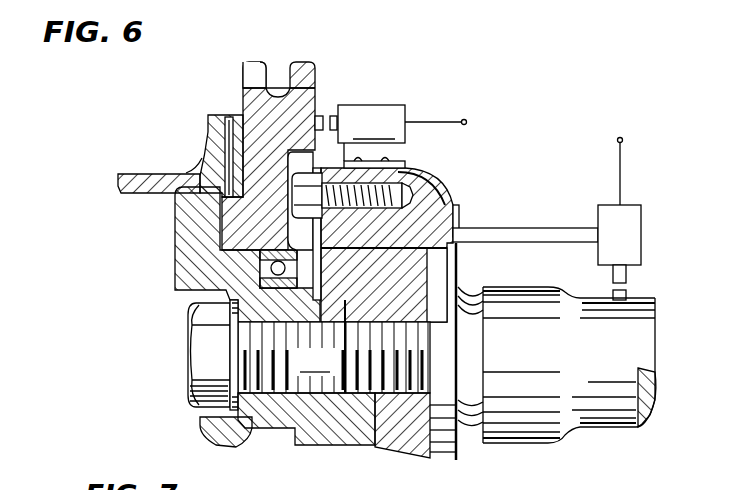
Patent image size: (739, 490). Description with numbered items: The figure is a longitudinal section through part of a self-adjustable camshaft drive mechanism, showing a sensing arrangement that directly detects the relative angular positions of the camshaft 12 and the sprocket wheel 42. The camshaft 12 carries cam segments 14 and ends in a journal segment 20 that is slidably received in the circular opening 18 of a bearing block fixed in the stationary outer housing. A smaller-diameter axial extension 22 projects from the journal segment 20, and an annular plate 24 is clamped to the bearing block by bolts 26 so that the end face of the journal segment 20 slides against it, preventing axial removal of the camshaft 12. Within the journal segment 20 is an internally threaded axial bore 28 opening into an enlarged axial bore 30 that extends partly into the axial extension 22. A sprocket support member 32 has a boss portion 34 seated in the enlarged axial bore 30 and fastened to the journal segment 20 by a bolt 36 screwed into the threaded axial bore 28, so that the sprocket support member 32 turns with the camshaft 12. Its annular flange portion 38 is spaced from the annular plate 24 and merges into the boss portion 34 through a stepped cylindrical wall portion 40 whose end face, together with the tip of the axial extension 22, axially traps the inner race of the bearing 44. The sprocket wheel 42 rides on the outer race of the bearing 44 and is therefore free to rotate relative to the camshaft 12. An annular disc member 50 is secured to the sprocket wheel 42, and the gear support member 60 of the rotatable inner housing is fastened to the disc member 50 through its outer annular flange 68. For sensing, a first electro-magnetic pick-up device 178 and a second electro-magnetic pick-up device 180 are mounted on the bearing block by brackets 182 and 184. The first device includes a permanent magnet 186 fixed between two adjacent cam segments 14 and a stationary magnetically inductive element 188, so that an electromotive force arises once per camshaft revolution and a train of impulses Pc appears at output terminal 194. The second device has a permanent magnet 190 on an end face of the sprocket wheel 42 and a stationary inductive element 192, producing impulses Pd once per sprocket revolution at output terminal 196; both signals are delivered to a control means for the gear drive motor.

The camshaft 12 is at (607, 430).
The cam segment 14 is at (530, 445).
The circular opening 18 is at (458, 262).
The journal segment 20 is at (458, 447).
The axial extension 22 is at (345, 280).
The annular plate 24 is at (352, 210).
The bolt 26 is at (425, 192).
The internally threaded axial bore 28 is at (402, 425).
The enlarged axial bore 30 is at (320, 446).
The sprocket support member 32 is at (274, 430).
The boss portion 34 is at (345, 445).
The bolt 36 is at (334, 357).
The annular flange portion 38 is at (175, 232).
The stepped cylindrical wall portion 40 is at (270, 290).
The sprocket wheel 42 is at (243, 100).
The bearing 44 is at (298, 284).
The annular disc member 50 is at (220, 117).
The gear support member 60 is at (133, 175).
The outer annular flange 68 is at (203, 148).
The first electro-magnetic pick-up device 178 is at (641, 226).
The second electro-magnetic pick-up device 180 is at (420, 124).
The bracket 182 is at (538, 228).
The bracket 184 is at (405, 168).
The permanent magnet 186 is at (628, 295).
The magnetically inductive element 188 is at (628, 276).
The permanent magnet 190 is at (320, 113).
The magnetically inductive element 192 is at (334, 113).
The output terminal 194 is at (624, 141).
The output terminal 196 is at (463, 120).